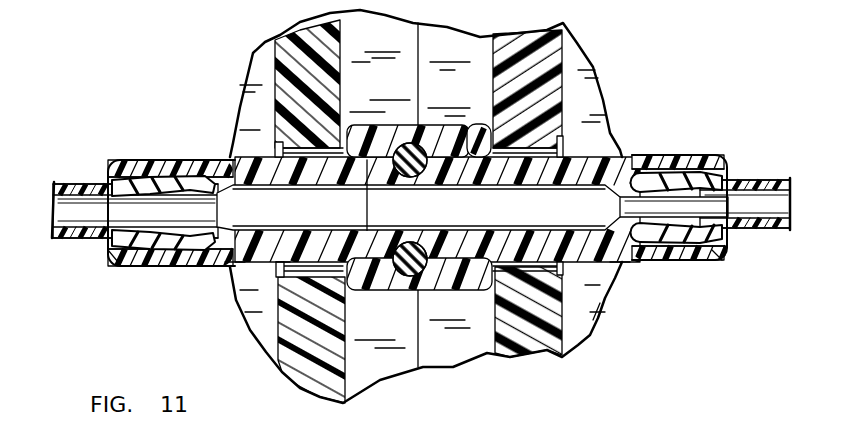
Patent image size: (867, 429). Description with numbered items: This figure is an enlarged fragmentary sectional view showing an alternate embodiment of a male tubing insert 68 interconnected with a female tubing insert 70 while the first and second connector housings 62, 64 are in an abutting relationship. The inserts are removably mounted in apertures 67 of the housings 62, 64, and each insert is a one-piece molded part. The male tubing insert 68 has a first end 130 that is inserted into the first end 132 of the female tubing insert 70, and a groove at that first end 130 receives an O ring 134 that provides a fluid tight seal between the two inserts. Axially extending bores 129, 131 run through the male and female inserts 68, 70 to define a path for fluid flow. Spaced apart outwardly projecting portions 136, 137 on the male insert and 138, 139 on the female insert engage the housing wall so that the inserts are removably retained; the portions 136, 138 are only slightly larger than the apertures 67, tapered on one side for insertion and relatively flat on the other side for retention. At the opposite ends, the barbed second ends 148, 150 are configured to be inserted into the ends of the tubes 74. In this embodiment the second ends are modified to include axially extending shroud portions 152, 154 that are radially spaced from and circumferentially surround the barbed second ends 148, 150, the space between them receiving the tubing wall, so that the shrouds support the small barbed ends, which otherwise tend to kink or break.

The first connector housing 62 is at (264, 62).
The second connector housing 64 is at (570, 57).
The apertures 67 is at (277, 146).
The tubes 74 is at (89, 183).
The outwardly projecting portion 139 is at (345, 124).
The first end 132 is at (378, 131).
The outwardly projecting portion 137 is at (479, 126).
The O ring 134 is at (406, 291).
The first end 130 is at (431, 293).
The shroud portion 154 is at (166, 159).
The shroud portion 152 is at (670, 154).
The second end 150 is at (111, 260).
The female tubing insert 70 is at (148, 265).
The axially extending bore 129 is at (233, 264).
The outwardly projecting portion 138 is at (283, 278).
The outwardly projecting portion 136 is at (601, 302).
The axially extending bore 131 is at (623, 262).
The male tubing insert 68 is at (678, 260).
The second end 148 is at (724, 250).